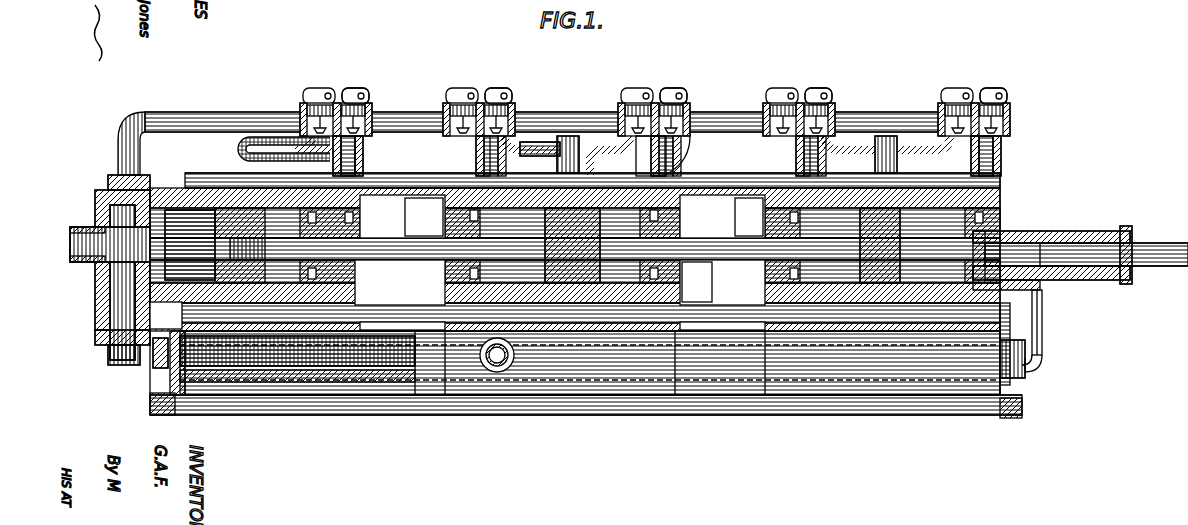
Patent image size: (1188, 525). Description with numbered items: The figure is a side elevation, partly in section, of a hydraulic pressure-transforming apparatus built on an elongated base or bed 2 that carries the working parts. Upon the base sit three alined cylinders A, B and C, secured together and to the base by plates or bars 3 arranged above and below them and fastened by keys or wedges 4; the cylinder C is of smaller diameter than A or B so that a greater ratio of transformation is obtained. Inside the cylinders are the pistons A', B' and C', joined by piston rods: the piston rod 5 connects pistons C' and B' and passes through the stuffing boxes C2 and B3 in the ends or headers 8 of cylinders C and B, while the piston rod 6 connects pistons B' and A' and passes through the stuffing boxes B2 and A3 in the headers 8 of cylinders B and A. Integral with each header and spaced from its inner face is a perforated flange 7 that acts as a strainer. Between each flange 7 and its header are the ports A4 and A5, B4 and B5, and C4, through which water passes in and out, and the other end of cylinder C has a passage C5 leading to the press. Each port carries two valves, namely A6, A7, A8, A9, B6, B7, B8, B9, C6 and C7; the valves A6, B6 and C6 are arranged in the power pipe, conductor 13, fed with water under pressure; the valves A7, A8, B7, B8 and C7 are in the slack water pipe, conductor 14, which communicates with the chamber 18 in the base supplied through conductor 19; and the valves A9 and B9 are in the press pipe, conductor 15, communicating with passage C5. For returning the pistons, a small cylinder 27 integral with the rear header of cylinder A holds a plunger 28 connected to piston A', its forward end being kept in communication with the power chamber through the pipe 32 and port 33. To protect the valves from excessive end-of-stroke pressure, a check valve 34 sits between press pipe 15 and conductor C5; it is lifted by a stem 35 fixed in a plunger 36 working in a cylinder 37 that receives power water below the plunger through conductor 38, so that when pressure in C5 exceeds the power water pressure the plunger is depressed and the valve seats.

The base or bed 2 is at (795, 395).
The plates or bars 3 is at (395, 185).
The keys or wedges 4 is at (923, 443).
The piston rod 5 is at (400, 282).
The piston rod 6 is at (722, 249).
The flange 7 is at (520, 185).
The ends or headers 8 is at (1005, 224).
The conductor (power pipe) 13 is at (360, 150).
The conductor (slack water pipe) 14 is at (249, 145).
The conductor (press pipe) 15 is at (190, 112).
The chamber 18 is at (388, 370).
The conductor 19 is at (497, 372).
The cylinder 27 is at (1052, 242).
The plunger 28 is at (1148, 240).
The pipe 32 is at (1042, 327).
The port 33 is at (1040, 282).
The check valve 34 is at (105, 275).
The stem 35 is at (96, 338).
The plunger 36 is at (105, 342).
The cylinder 37 is at (166, 315).
The conductor 38 is at (160, 360).
The cylinder A is at (959, 232).
The piston A' is at (882, 378).
The stuffing box A3 is at (749, 217).
The port A4 is at (1000, 165).
The port A5 is at (790, 185).
The valve A6 is at (992, 88).
The valve A7 is at (950, 88).
The valve A8 is at (820, 88).
The valve A9 is at (778, 88).
The cylinder B is at (655, 239).
The piston B' is at (560, 389).
The stuffing box B2 is at (697, 282).
The stuffing box B3 is at (424, 217).
The port B4 is at (660, 176).
The port B5 is at (460, 157).
The valve B6 is at (670, 88).
The valve B7 is at (632, 88).
The valve B8 is at (500, 88).
The valve B9 is at (458, 88).
The cylinder C is at (189, 214).
The piston C' is at (300, 395).
The stuffing box C2 is at (402, 216).
The port C4 is at (358, 165).
The passage C5 is at (80, 230).
The valve C6 is at (362, 88).
The valve C7 is at (310, 88).